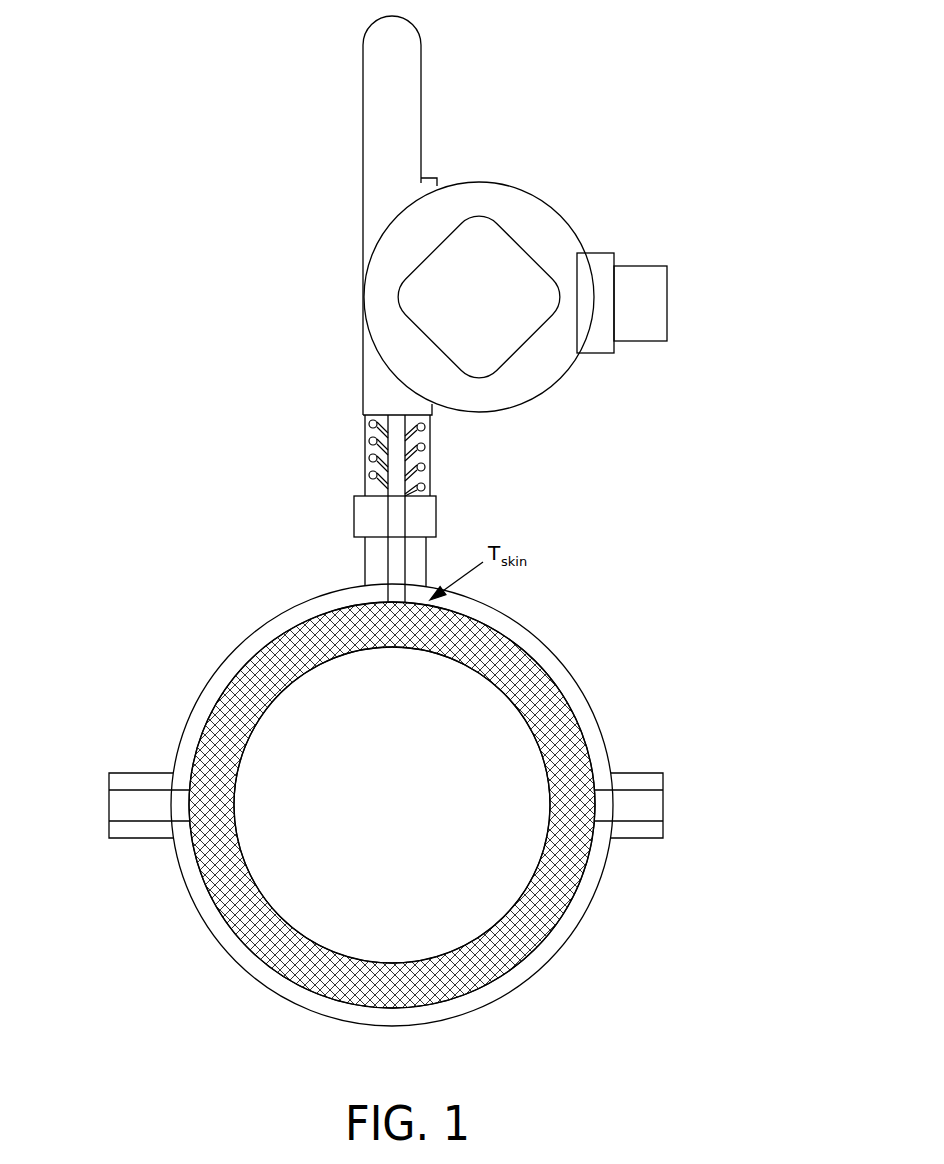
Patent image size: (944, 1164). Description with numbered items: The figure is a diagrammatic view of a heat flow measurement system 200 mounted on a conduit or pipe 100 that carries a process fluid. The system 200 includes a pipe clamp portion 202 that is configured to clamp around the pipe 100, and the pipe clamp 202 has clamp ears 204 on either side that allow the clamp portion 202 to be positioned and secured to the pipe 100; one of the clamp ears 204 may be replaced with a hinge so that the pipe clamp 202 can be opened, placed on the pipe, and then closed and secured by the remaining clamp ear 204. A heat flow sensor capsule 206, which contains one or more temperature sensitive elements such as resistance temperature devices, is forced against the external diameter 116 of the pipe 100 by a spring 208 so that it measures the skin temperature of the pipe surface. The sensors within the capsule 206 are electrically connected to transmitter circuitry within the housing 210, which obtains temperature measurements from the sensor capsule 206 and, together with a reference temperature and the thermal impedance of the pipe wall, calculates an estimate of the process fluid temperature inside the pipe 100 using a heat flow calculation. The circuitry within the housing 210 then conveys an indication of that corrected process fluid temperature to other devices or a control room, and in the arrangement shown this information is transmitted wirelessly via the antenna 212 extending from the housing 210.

The pipe 100 is at (542, 928).
The external diameter 116 is at (492, 627).
The heat flow measurement system 200 is at (627, 124).
The pipe clamp portion 202 is at (528, 630).
The clamp ears 204 is at (128, 838).
The heat flow sensor capsule 206 is at (397, 577).
The spring 208 is at (430, 448).
The housing 210 is at (570, 230).
The antenna 212 is at (422, 80).